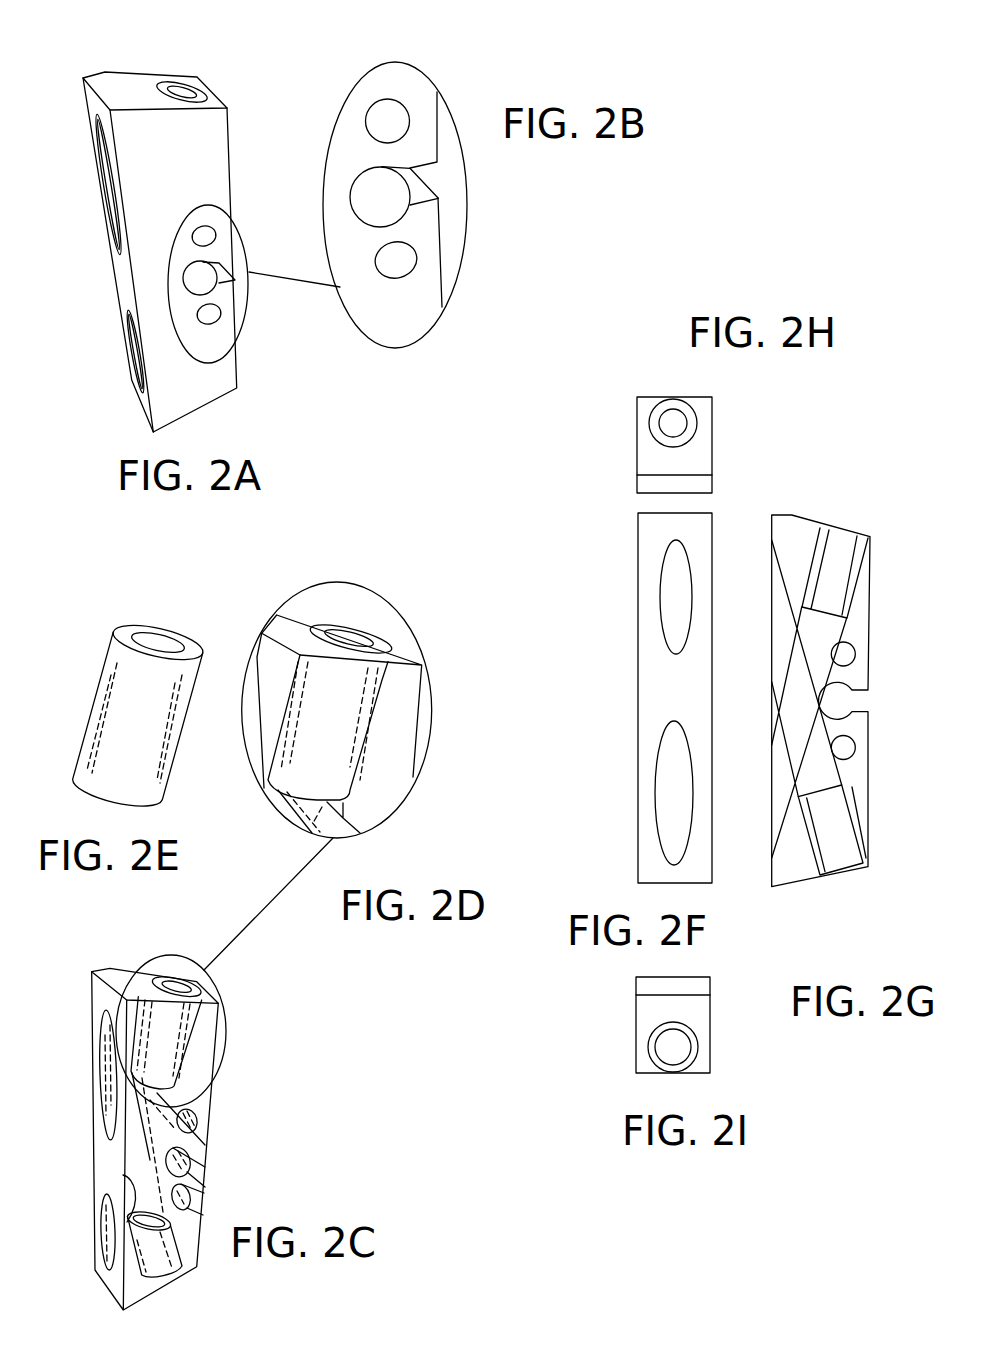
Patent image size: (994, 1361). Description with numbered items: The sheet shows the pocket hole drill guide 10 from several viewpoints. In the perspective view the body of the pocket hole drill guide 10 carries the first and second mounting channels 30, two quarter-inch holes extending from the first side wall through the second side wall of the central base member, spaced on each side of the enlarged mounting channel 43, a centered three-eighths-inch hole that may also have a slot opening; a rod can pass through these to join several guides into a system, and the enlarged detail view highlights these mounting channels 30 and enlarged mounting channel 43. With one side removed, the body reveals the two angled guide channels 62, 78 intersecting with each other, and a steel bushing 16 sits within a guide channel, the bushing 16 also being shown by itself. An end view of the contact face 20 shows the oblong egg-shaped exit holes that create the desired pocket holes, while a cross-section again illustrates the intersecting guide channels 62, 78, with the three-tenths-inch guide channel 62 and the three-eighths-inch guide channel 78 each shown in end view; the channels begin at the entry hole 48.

In FIG. 2A, the pocket hole drill guide 10 is at (90, 270).
In FIG. 2C, the pocket hole drill guide 10 is at (90, 1150).
In FIG. 2A, the entry hole 48 is at (183, 90).
In FIG. 2B, the mounting channels 30 is at (387, 107).
In FIG. 2B, the enlarged mounting channel 43 is at (388, 188).
In FIG. 2E, the steel bushing 16 is at (138, 687).
In FIG. 2D, the steel bushing 16 is at (347, 645).
In FIG. 2C, the steel bushing 16 is at (168, 1018).
In FIG. 2F, the contact face 20 is at (650, 600).
In FIG. 2H, the guide channel 62 is at (667, 418).
In FIG. 2G, the guide channel 62 is at (841, 526).
In FIG. 2G, the guide channel 78 is at (837, 848).
In FIG. 2I, the guide channel 78 is at (665, 1053).